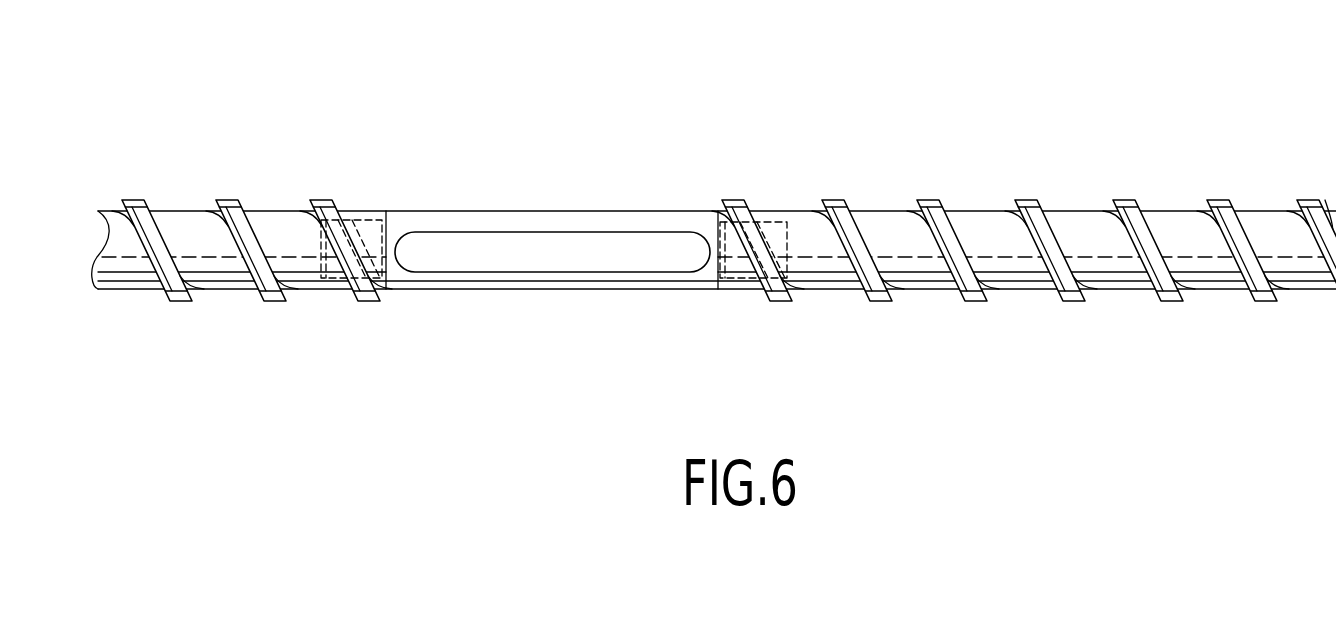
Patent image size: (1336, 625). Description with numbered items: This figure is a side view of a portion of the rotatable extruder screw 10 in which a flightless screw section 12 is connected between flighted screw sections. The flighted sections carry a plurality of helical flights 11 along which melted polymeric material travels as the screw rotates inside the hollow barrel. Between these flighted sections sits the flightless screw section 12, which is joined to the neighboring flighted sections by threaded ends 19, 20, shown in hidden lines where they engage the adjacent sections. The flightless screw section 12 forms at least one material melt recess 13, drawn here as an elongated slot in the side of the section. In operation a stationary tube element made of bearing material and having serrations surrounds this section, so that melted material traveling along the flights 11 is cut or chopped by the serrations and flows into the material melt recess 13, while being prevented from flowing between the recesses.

The rotatable extruder screw 10 is at (714, 223).
The flights 11 is at (1015, 207).
The flightless screw section 12 is at (565, 292).
The material melt recess 13 is at (605, 238).
The threaded end 19 is at (730, 292).
The threaded end 20 is at (338, 281).